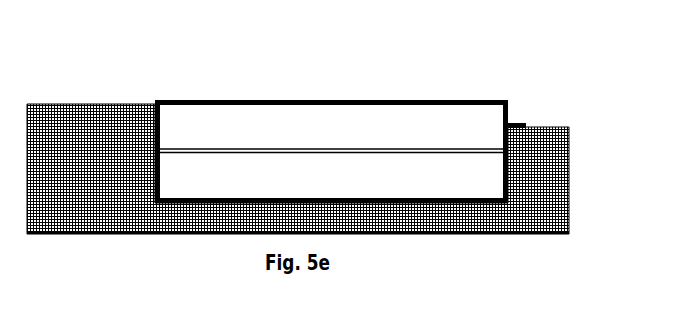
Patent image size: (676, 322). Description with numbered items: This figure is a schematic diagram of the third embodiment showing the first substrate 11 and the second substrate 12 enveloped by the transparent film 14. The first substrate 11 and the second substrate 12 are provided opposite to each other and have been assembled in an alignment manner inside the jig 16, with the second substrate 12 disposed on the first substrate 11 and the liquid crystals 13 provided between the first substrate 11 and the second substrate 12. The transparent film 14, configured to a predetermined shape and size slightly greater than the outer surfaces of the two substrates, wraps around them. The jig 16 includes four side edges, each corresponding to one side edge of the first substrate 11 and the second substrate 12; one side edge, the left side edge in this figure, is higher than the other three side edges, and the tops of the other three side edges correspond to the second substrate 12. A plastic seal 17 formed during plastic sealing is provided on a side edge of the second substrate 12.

The first substrate 11 is at (370, 178).
The second substrate 12 is at (217, 130).
The liquid crystals 13 is at (318, 150).
The transparent film 14 is at (436, 198).
The jig 16 is at (72, 155).
The plastic seal 17 is at (517, 123).